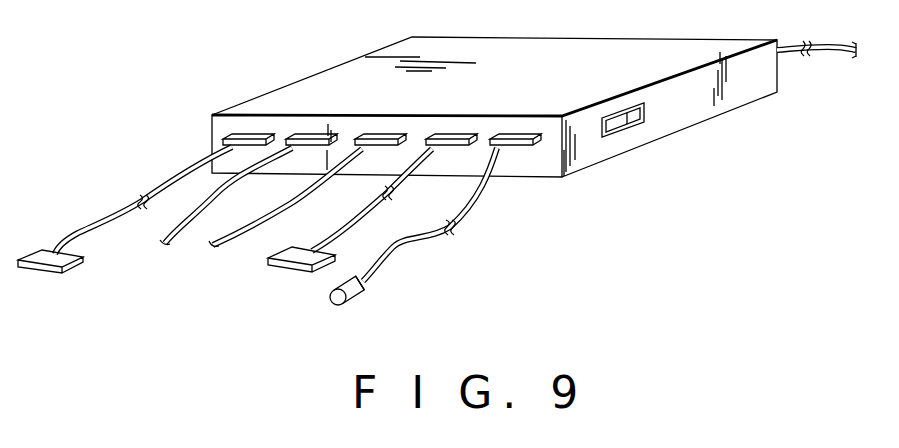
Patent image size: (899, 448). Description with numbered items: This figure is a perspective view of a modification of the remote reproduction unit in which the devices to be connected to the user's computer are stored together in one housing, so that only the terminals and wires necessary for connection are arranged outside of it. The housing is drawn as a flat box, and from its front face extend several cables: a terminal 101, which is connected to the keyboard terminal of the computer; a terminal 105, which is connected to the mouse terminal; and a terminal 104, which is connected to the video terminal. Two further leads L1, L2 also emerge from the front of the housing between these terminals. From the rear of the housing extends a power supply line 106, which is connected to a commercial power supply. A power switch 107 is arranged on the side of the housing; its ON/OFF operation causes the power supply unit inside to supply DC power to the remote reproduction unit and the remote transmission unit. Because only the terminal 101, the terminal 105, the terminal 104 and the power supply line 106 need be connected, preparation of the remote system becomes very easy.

The terminal 101 is at (85, 224).
The terminal 104 is at (337, 238).
The terminal 105 is at (393, 266).
The power supply line 106 is at (840, 57).
The power switch 107 is at (623, 137).
The lead wire L1 is at (172, 246).
The lead wire L2 is at (226, 248).